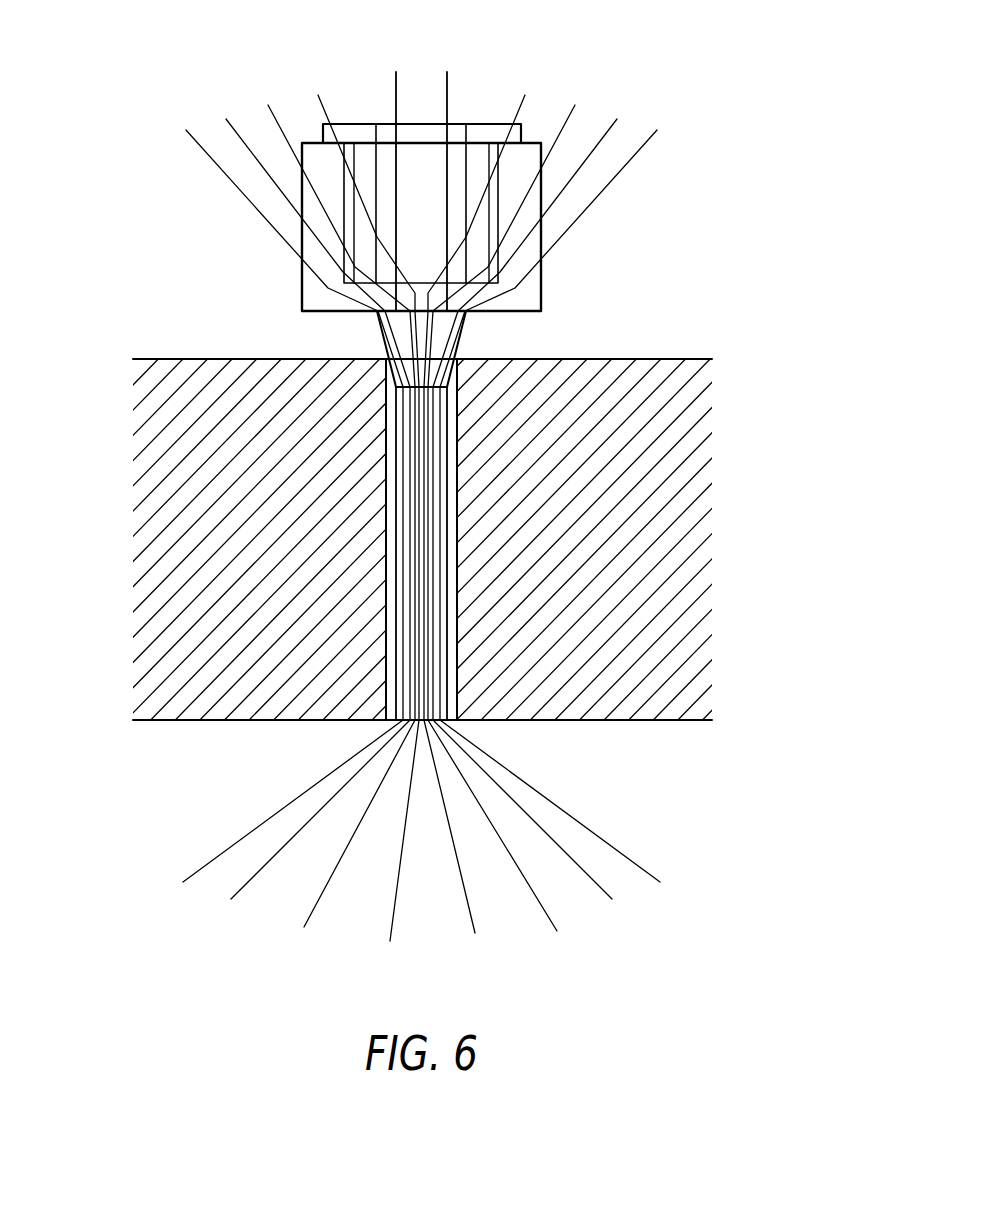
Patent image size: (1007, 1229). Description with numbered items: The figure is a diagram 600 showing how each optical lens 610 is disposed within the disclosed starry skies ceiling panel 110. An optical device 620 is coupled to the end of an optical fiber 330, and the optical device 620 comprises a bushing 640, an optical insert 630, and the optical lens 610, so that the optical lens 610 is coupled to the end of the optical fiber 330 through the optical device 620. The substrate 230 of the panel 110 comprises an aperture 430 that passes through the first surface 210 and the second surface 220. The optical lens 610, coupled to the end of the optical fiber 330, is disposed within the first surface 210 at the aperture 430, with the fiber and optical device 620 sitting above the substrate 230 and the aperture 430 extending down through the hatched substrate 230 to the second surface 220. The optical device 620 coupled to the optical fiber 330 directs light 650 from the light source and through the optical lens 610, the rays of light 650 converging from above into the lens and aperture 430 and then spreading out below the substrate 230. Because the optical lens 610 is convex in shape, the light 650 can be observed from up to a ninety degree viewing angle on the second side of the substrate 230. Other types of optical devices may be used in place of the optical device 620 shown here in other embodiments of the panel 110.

The starry skies ceiling panel 110 is at (95, 578).
The first surface 210 is at (191, 748).
The second surface 220 is at (133, 350).
The substrate 230 is at (738, 360).
The optical fiber 330 is at (395, 90).
The aperture 430 is at (370, 428).
The diagram 600 is at (165, 965).
The optical lens 610 is at (500, 338).
The optical device 620 is at (166, 386).
The optical insert 630 is at (715, 143).
The bushing 640 is at (480, 123).
The light 650 is at (213, 160).